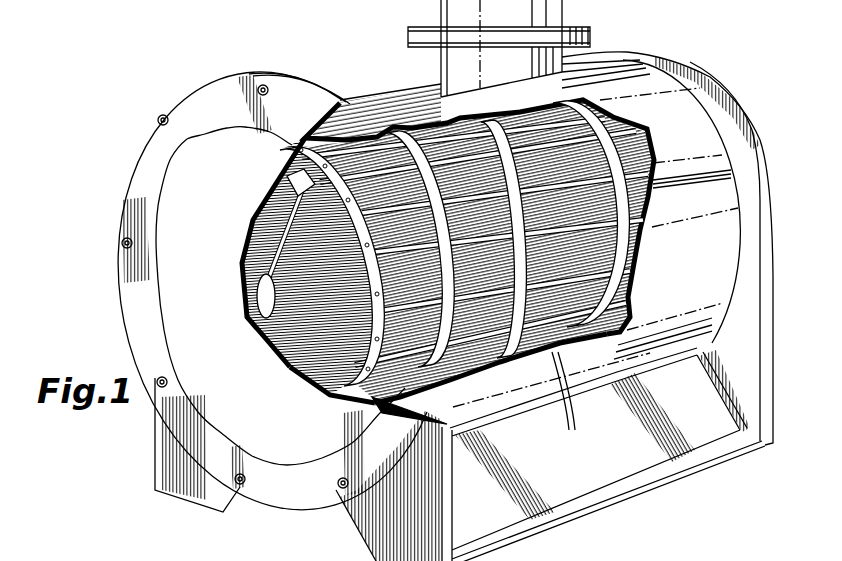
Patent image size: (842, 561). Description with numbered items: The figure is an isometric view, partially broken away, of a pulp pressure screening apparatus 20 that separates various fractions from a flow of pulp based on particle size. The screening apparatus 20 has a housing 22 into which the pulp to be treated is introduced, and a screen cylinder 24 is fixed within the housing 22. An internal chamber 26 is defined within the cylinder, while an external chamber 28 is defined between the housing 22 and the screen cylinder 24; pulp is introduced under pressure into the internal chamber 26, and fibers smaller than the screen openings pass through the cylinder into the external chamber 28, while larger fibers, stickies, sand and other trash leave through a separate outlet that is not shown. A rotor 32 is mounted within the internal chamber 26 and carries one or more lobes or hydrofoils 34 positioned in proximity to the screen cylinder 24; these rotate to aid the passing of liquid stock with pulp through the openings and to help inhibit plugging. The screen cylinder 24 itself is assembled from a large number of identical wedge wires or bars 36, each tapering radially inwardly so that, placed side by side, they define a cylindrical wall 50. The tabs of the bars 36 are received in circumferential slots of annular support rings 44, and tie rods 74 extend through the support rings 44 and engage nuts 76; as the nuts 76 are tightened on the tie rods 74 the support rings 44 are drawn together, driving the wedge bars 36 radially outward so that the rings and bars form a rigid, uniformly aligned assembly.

The pulp pressure screening apparatus 20 is at (750, 88).
The housing 22 is at (355, 97).
The screen cylinder 24 is at (502, 286).
The internal chamber 26 is at (292, 362).
The external chamber 28 is at (380, 130).
The rotor 32 is at (240, 231).
The hydrofoils 34 is at (272, 182).
The wedge bars 36 is at (556, 365).
The annular support rings 44 is at (490, 330).
The cylindrical wall 50 is at (604, 334).
The tie rods 74 is at (440, 388).
The nuts 76 is at (330, 387).